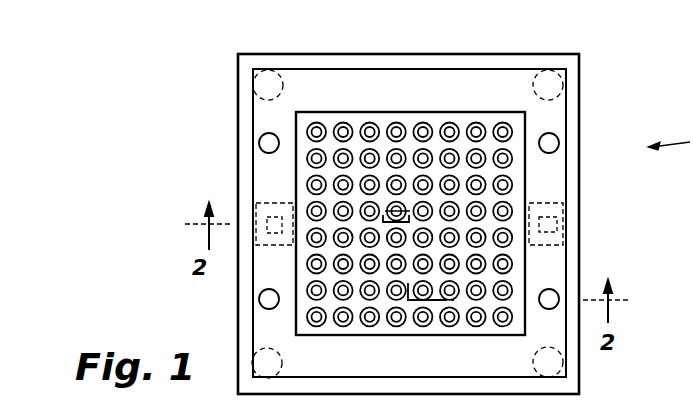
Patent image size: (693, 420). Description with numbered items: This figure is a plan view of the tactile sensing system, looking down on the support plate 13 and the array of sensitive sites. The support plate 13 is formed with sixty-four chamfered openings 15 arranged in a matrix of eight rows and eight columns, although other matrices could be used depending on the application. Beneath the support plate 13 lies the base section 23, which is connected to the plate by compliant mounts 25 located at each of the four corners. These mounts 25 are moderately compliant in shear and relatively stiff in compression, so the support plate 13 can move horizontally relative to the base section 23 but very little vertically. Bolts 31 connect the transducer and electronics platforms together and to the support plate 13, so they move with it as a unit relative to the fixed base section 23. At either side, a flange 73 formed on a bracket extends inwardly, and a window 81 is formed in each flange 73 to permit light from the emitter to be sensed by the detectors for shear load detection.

The support plate 13 is at (418, 97).
The chamfered openings 15 is at (512, 157).
The base section 23 is at (262, 54).
The compliant mounts 25 is at (254, 85).
The bolts 31 is at (260, 143).
The flange 73 is at (267, 203).
The window 81 is at (270, 245).